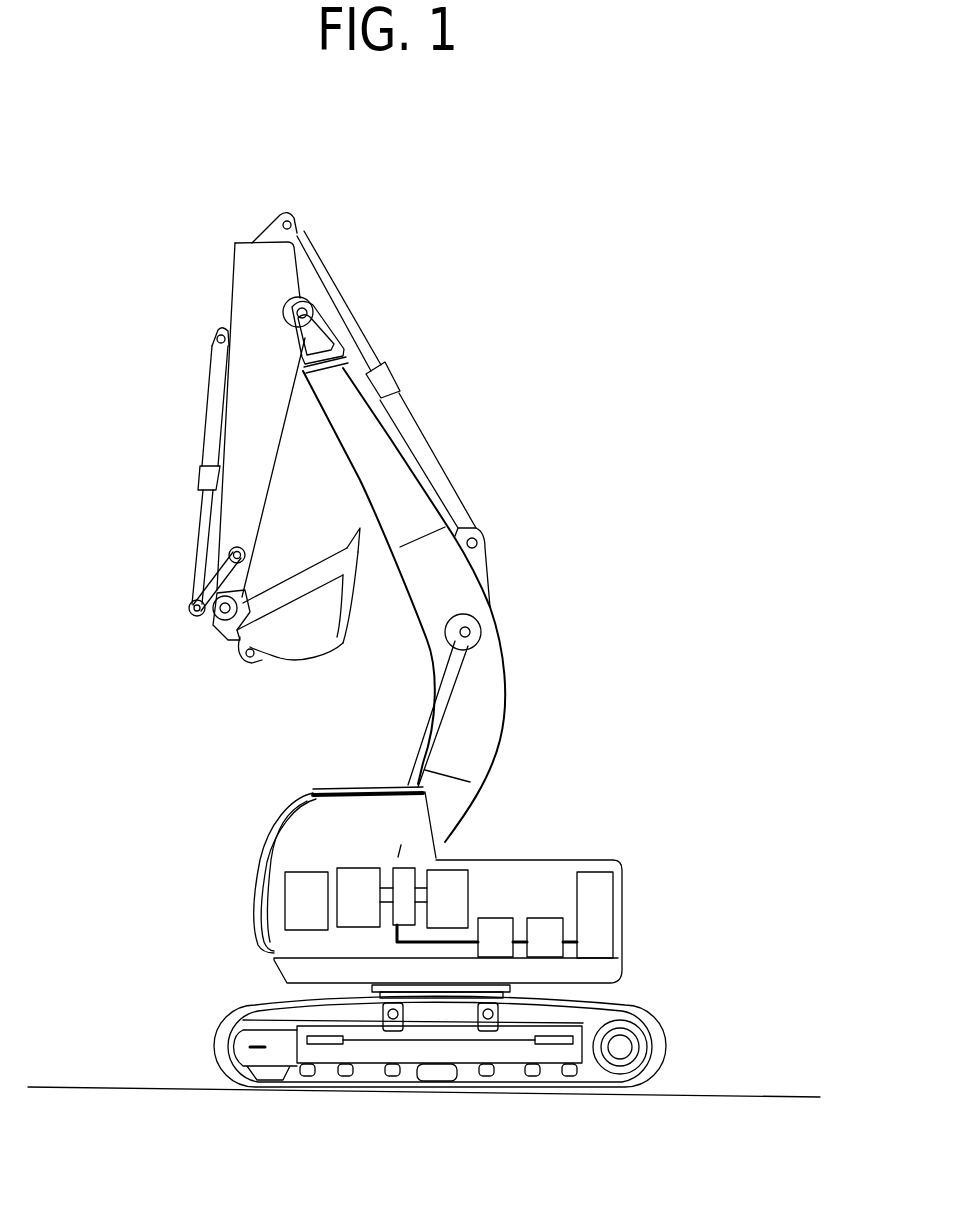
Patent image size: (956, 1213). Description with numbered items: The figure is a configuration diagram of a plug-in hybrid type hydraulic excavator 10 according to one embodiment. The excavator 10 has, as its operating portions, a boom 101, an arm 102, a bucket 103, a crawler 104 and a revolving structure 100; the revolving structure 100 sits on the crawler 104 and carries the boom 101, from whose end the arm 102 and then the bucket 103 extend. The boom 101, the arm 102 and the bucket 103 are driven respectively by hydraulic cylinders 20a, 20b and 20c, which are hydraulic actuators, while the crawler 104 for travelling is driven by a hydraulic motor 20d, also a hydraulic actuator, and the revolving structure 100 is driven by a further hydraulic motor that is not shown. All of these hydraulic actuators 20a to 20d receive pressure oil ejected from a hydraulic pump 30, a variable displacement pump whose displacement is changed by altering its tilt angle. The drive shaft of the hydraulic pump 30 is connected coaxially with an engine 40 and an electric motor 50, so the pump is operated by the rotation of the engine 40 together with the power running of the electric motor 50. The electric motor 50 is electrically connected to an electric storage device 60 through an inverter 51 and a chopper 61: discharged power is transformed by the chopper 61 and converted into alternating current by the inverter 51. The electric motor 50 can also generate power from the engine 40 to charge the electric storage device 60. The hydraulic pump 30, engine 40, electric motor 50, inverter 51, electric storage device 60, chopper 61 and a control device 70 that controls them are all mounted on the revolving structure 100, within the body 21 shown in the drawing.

The plug-in hybrid type hydraulic excavator 10 is at (422, 326).
The hydraulic cylinder 20a is at (430, 733).
The hydraulic cylinder 20b is at (418, 446).
The hydraulic cylinder 20c is at (206, 400).
The hydraulic motor 20d is at (623, 1045).
The upper frame 21 is at (489, 921).
The hydraulic pump 30 is at (358, 868).
The engine 40 is at (450, 870).
The electric motor 50 is at (408, 868).
The inverter 51 is at (490, 918).
The electric storage device 60 is at (607, 917).
The chopper 61 is at (537, 918).
The control device 70 is at (283, 892).
The revolving structure 100 is at (272, 793).
The boom 101 is at (492, 663).
The arm 102 is at (245, 276).
The bucket 103 is at (313, 645).
The crawler 104 is at (234, 1004).